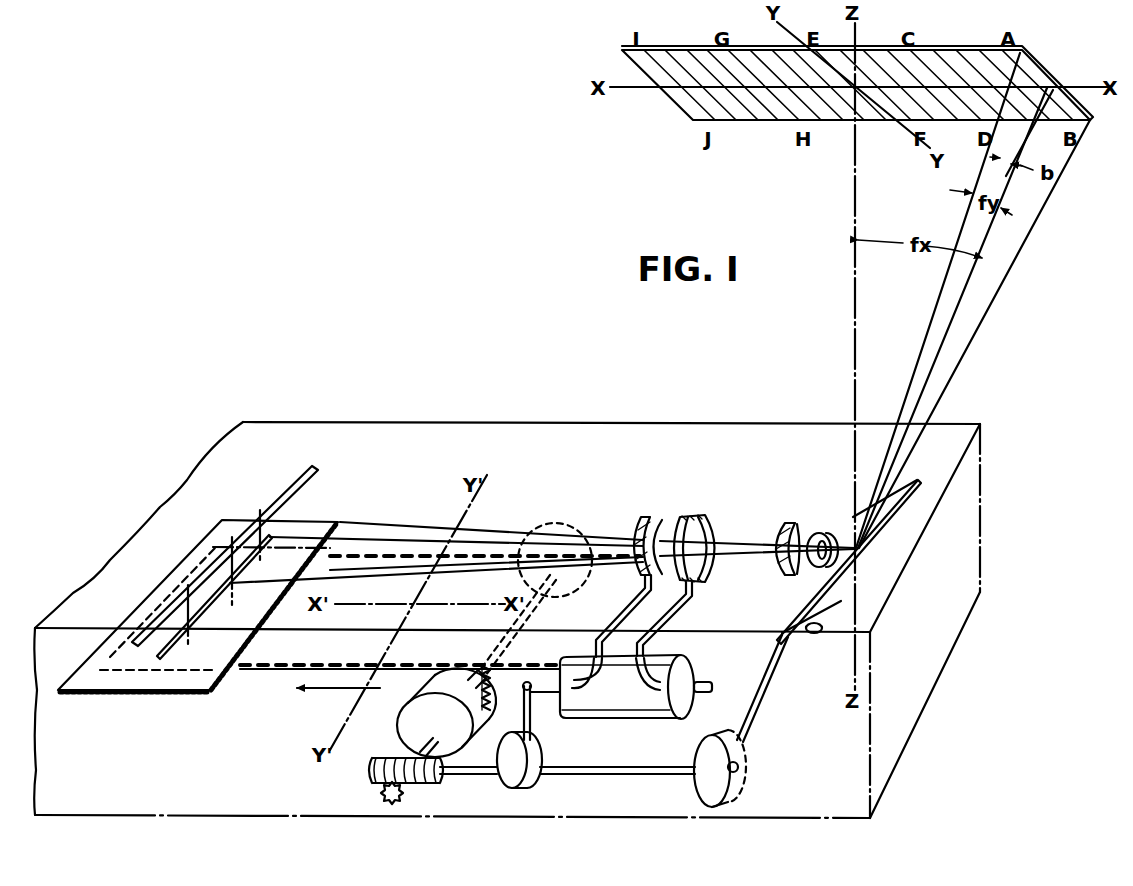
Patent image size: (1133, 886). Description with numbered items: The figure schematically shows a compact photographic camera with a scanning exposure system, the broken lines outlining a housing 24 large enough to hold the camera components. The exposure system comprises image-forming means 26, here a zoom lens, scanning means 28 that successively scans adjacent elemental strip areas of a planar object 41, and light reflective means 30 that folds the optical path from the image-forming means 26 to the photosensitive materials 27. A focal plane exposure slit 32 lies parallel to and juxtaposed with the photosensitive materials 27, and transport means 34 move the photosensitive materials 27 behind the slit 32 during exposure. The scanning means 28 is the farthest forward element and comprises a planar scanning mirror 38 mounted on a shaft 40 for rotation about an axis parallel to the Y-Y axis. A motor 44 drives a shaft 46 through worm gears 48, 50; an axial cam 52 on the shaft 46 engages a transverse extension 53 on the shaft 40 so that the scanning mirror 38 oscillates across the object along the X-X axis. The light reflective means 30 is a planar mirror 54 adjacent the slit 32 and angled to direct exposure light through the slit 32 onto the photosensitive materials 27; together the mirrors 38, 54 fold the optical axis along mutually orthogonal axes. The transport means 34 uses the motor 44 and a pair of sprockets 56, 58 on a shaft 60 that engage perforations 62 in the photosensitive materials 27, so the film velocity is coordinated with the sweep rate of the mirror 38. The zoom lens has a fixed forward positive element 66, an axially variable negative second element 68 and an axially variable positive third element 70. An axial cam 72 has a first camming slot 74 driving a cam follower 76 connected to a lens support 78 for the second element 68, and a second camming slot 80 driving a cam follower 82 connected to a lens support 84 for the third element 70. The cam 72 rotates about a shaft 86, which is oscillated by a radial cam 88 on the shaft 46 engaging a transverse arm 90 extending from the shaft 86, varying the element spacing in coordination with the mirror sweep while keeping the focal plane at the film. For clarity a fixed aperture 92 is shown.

The housing 24 is at (980, 500).
The image-forming means 26 is at (648, 460).
The photosensitive materials 27 is at (242, 671).
The scanning means 28 is at (815, 752).
The light reflective means 30 is at (281, 455).
The focal plane exposure slit 32 is at (186, 632).
The transport means 34 is at (308, 713).
The scanning mirror 38 is at (856, 559).
The shaft 40 is at (818, 633).
The planar object 41 is at (727, 113).
The motor 44 is at (400, 713).
The shaft 46 is at (588, 776).
The worm gear 48 is at (372, 766).
The worm gear 50 is at (393, 801).
The axial cam 52 is at (700, 776).
The transverse extension 53 is at (739, 763).
The planar mirror 54 is at (316, 468).
The sprocket 56 is at (485, 693).
The sprocket 58 is at (580, 547).
The shaft 60 is at (532, 598).
The perforations 62 is at (378, 668).
The forward positive element 66 is at (778, 530).
The negative second element 68 is at (674, 523).
The positive third element 70 is at (637, 522).
The axial cam 72 is at (620, 700).
The first camming slot 74 is at (657, 692).
The cam follower 76 is at (637, 651).
The lens support 78 is at (699, 566).
The second camming slot 80 is at (580, 702).
The cam follower 82 is at (591, 643).
The lens mount 84 is at (643, 579).
The shaft 86 is at (700, 688).
The radial cam 88 is at (528, 762).
The transverse arm 90 is at (527, 681).
The fixed aperture 92 is at (818, 535).